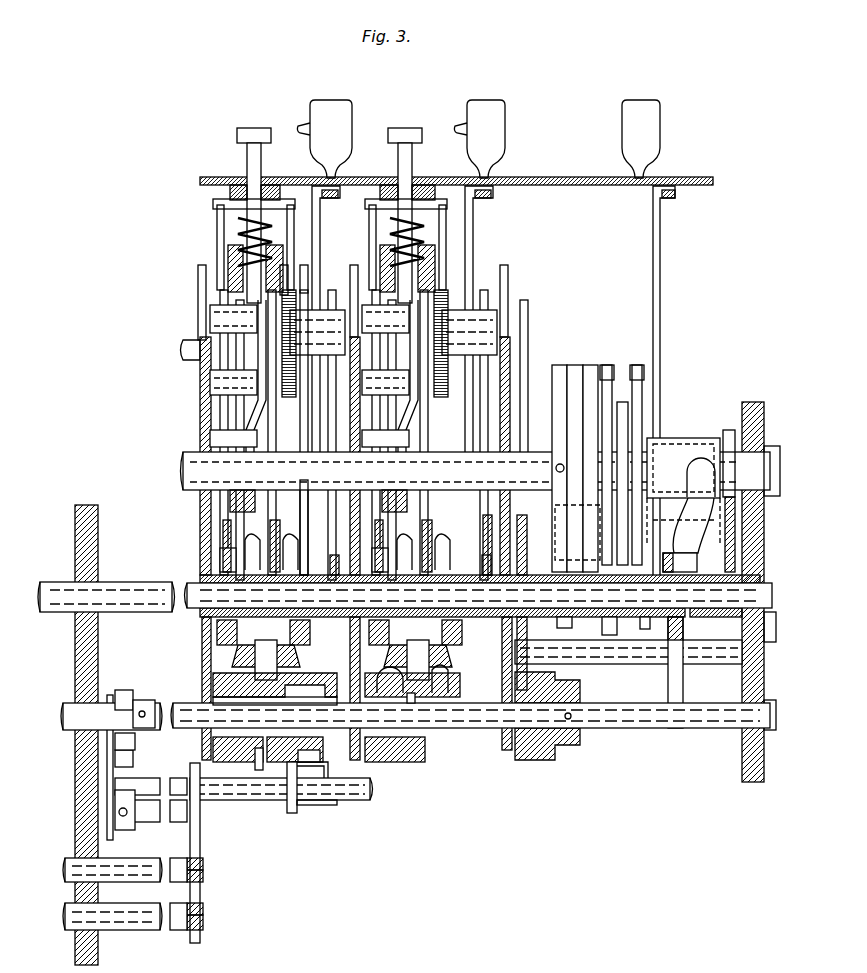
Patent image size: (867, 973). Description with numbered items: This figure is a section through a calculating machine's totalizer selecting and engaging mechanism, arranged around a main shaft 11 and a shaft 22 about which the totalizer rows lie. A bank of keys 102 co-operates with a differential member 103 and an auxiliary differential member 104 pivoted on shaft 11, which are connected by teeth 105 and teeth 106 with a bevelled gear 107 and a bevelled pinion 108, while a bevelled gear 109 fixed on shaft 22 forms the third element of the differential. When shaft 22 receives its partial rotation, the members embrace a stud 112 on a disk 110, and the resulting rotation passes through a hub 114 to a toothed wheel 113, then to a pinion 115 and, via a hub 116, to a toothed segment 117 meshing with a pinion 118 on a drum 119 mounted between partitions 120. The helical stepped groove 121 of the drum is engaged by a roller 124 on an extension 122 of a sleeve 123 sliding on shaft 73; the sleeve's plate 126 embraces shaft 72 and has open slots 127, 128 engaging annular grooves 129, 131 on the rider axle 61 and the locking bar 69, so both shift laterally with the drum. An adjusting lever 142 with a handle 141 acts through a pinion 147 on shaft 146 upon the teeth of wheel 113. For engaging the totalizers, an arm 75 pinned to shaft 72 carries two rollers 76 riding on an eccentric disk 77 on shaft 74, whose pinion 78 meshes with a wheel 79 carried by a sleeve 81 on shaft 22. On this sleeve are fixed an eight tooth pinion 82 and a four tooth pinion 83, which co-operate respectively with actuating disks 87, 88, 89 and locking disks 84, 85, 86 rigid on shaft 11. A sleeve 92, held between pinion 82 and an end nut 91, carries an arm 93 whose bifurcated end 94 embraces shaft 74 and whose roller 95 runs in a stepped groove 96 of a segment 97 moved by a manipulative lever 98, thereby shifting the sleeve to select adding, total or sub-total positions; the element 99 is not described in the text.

The shaft 11 is at (183, 466).
The shaft 22 is at (130, 605).
The rider axle 61 is at (180, 875).
The locking bar 69 is at (180, 925).
The shaft 72 is at (145, 822).
The shaft 73 is at (362, 792).
The shaft 74 is at (183, 708).
The arm 75 is at (107, 763).
The rollers 76 is at (126, 692).
The eccentric disk 77 is at (135, 742).
The pinion 78 is at (548, 745).
The wheel 79 is at (528, 636).
The sleeve 81 is at (540, 577).
The eight tooth pinion 82 is at (612, 630).
The four tooth pinion 83 is at (572, 625).
The locking disk 84 is at (552, 393).
The locking disk 85 is at (574, 370).
The locking disk 86 is at (590, 365).
The actuating disk 87 is at (607, 368).
The actuating disk 88 is at (622, 402).
The actuating disk 89 is at (638, 365).
The end nut 91 is at (708, 618).
The sleeve 92 is at (652, 630).
The arm 93 is at (683, 630).
The bifurcated end 94 is at (676, 722).
The roller 95 is at (680, 550).
The stepped groove 96 is at (686, 486).
The segment 97 is at (696, 436).
The manipulative lever 98 is at (653, 226).
The member 99 is at (556, 368).
The keys 102 is at (247, 155).
The differential member 103 is at (226, 375).
The auxiliary differential member 104 is at (240, 437).
The teeth 105 is at (222, 556).
The teeth 106 is at (270, 540).
The bevelled gear 107 is at (319, 660).
The bevelled pinion 108 is at (287, 660).
The bevelled gear 109 is at (296, 640).
The disk 110 is at (270, 420).
The stud 112 is at (306, 300).
The toothed wheel 113 is at (306, 525).
The hub 114 is at (285, 496).
The pinion 115 is at (318, 578).
The hub 116 is at (479, 595).
The toothed segment 117 is at (360, 650).
The pinion 118 is at (322, 758).
The drum 119 is at (240, 700).
The partitions 120 is at (348, 485).
The helical stepped groove 121 is at (262, 770).
The extension 122 is at (300, 803).
The sleeve 123 is at (290, 813).
The roller 124 is at (330, 766).
The plate 126 is at (200, 830).
The open slot 127 is at (203, 862).
The open slot 128 is at (203, 908).
The annular groove 129 is at (203, 875).
The annular groove 131 is at (203, 922).
The handle 141 is at (465, 120).
The adjusting lever 142 is at (313, 250).
The shaft 146 is at (186, 345).
The pinion 147 is at (297, 330).